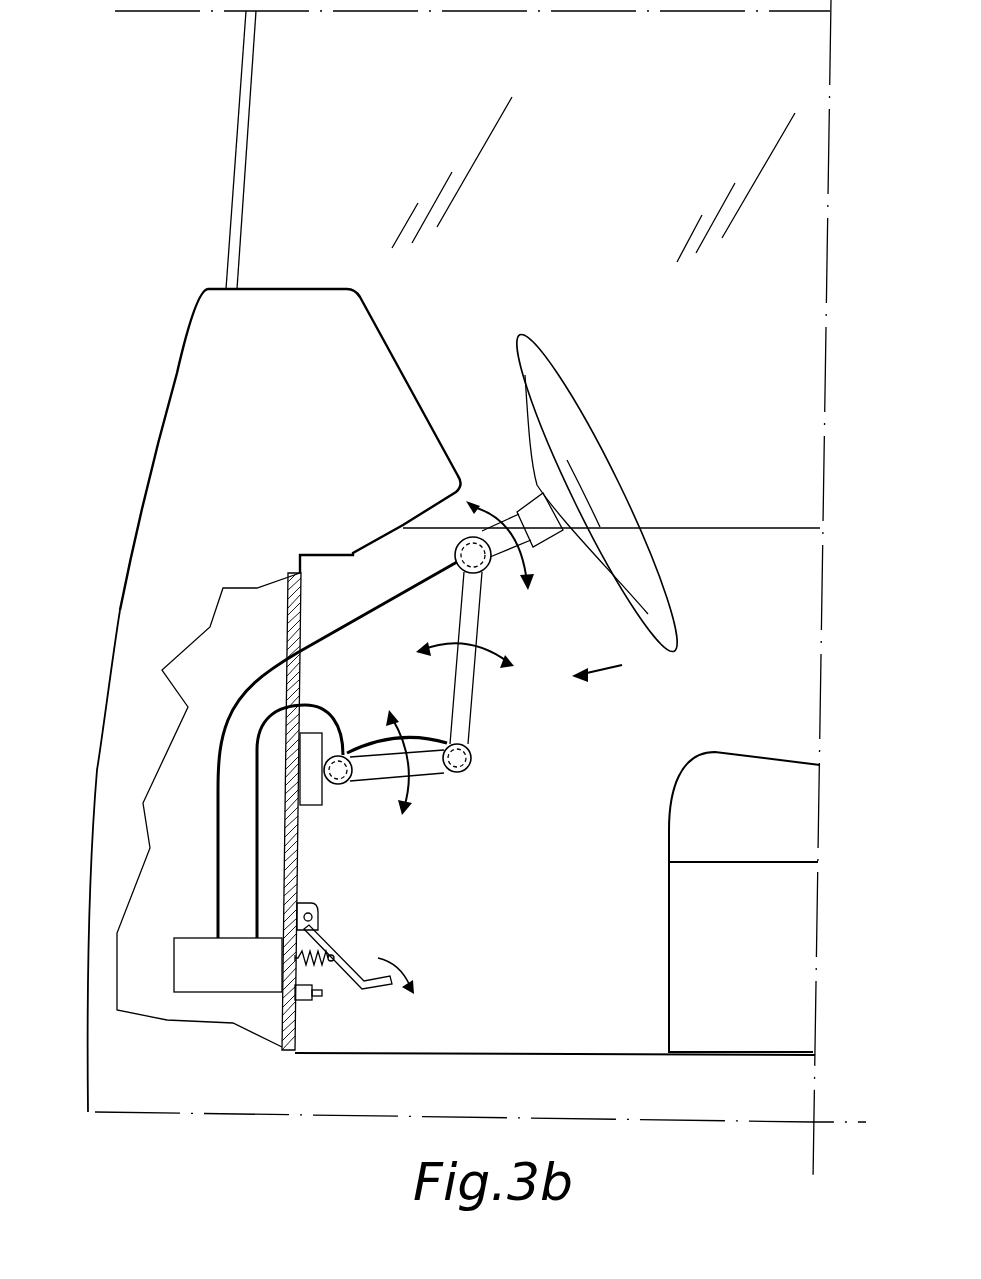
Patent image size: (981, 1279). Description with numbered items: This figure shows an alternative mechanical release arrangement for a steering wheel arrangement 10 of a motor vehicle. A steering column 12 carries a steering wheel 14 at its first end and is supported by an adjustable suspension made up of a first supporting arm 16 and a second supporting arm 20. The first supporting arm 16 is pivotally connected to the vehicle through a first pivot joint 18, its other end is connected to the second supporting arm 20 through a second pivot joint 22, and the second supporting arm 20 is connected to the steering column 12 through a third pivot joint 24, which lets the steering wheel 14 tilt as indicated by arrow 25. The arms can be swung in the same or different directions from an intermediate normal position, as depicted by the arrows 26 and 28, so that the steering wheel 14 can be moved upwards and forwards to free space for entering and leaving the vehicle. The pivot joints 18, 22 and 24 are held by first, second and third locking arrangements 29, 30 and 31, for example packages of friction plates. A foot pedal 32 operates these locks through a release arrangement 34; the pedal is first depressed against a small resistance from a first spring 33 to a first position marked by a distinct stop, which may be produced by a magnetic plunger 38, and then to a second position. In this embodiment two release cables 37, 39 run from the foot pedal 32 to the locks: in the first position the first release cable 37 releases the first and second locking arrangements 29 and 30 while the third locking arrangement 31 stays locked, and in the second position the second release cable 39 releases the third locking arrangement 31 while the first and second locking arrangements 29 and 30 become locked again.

The steering wheel arrangement 10 is at (611, 667).
The steering column 12 is at (522, 540).
The steering wheel 14 is at (540, 372).
The first supporting arm 16 is at (375, 763).
The first pivot joint 18 is at (340, 782).
The second supporting arm 20 is at (467, 700).
The second pivot joint 22 is at (460, 772).
The third pivot joint 24 is at (475, 577).
The arrow 25 is at (489, 527).
The arrow 26 is at (413, 782).
The arrow 28 is at (484, 655).
The first locking arrangement 29 is at (348, 776).
The second locking arrangement 30 is at (478, 760).
The third locking arrangement 31 is at (490, 567).
The foot pedal 32 is at (353, 966).
The first spring 33 is at (313, 931).
The release arrangement 34 is at (207, 968).
The first release cable 37 is at (232, 698).
The magnetic plunger 38 is at (308, 998).
The second release cable 39 is at (256, 852).